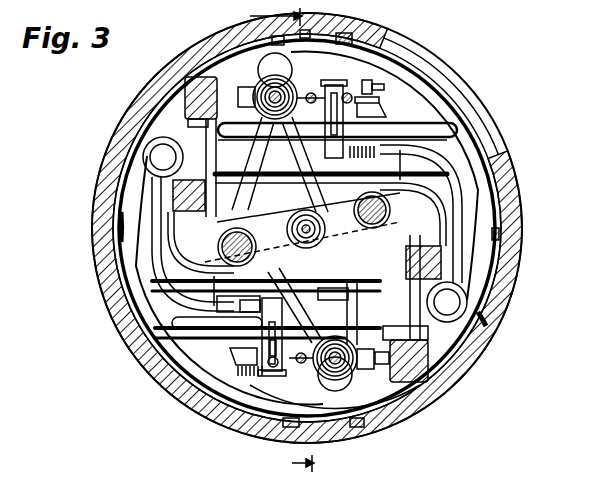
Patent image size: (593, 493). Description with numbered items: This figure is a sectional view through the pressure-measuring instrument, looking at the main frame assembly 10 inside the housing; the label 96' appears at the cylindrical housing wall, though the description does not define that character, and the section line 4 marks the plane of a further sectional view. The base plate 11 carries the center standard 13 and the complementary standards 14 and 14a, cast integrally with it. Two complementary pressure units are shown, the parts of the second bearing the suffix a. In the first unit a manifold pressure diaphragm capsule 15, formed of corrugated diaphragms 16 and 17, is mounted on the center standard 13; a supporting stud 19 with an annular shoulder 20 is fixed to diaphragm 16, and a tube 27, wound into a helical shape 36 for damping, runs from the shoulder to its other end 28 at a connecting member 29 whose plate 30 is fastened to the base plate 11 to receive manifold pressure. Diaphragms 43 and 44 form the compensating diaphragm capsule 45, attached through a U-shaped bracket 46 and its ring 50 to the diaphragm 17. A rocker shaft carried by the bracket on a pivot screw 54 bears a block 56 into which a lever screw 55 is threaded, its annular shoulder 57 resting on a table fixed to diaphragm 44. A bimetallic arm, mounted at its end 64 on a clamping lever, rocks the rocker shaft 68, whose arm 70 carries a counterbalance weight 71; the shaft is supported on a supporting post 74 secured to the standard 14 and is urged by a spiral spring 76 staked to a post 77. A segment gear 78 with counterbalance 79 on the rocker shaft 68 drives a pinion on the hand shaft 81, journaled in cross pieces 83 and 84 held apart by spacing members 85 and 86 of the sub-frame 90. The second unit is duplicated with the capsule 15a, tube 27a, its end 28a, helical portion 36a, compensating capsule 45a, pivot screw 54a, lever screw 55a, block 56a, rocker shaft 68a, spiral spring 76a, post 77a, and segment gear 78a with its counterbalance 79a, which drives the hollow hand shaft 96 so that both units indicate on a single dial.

The section line 4 is at (279, 243).
The main frame assembly 10 is at (470, 200).
The base plate 11 is at (467, 157).
The center frame standard 13 is at (450, 190).
The complementary standard 14 is at (430, 350).
The complementary standard 14a is at (186, 93).
The manifold pressure diaphragm capsule 15 is at (187, 276).
The manifold pressure diaphragm capsule 15a is at (423, 163).
The corrugated diaphragm 16 is at (155, 286).
The corrugated diaphragm 17 is at (187, 320).
The supporting stud 19 is at (270, 212).
The annular shoulder 20 is at (312, 258).
The tube 27 is at (120, 213).
The tube 27a is at (478, 208).
The end of tube 28 is at (232, 352).
The end of tube 28a is at (478, 277).
The connecting member 29 is at (475, 340).
The plate 30 is at (253, 375).
The helical shape 36 is at (142, 148).
The helical shape 36a is at (473, 302).
The corrugated diaphragm 43 is at (160, 330).
The diaphragm 44 is at (230, 345).
The compensating diaphragm capsule 45 is at (175, 338).
The compensating diaphragm capsule 45a is at (420, 117).
The U-shaped bracket 46 is at (262, 372).
The ring 50 is at (336, 298).
The threaded pivot screw 54 is at (292, 392).
The threaded pivot screw 54a is at (380, 84).
The lever screw 55 is at (285, 380).
The lever screw 55a is at (350, 88).
The block 56 is at (300, 402).
The block 56a is at (400, 60).
The annular shoulder 57 is at (275, 385).
The end of bimetallic arm 64 is at (316, 392).
The rocker shaft 68 is at (395, 400).
The rocker shaft 68a is at (262, 72).
The arm 70 is at (437, 402).
The counterbalance weight 71 is at (410, 418).
The supporting post 74 is at (445, 385).
The spiral spring 76 is at (330, 428).
The spiral spring 76a is at (355, 42).
The post 77 is at (310, 405).
The post 77a is at (385, 60).
The segment gear 78 is at (500, 320).
The segment gear 78a is at (240, 152).
The counterbalance 79 is at (365, 415).
The counterbalance 79a is at (310, 38).
The hand shaft 81 is at (465, 138).
The cross piece 83 is at (225, 253).
The cross piece 84 is at (215, 240).
The spacing member 85 is at (470, 185).
The spacing member 86 is at (217, 271).
The sub-frame 90 is at (210, 306).
The hollow hand shaft 96 is at (280, 164).
The leg 96' is at (528, 240).